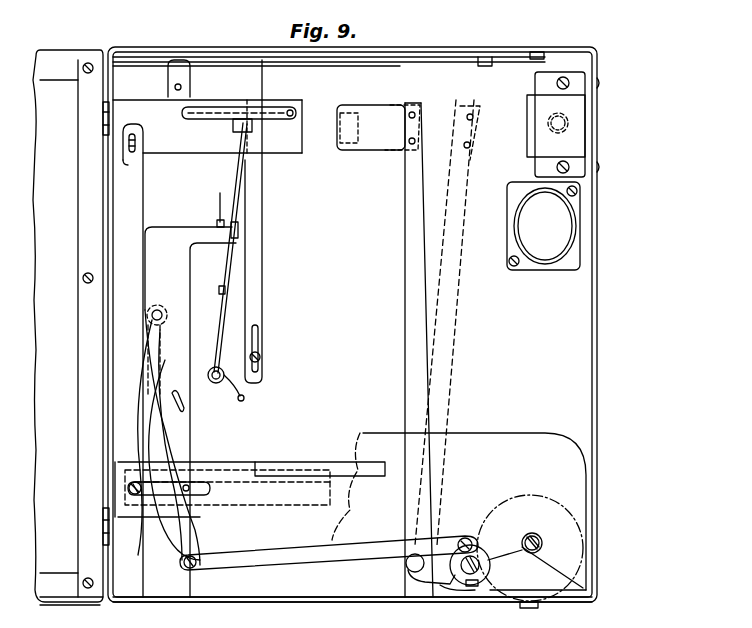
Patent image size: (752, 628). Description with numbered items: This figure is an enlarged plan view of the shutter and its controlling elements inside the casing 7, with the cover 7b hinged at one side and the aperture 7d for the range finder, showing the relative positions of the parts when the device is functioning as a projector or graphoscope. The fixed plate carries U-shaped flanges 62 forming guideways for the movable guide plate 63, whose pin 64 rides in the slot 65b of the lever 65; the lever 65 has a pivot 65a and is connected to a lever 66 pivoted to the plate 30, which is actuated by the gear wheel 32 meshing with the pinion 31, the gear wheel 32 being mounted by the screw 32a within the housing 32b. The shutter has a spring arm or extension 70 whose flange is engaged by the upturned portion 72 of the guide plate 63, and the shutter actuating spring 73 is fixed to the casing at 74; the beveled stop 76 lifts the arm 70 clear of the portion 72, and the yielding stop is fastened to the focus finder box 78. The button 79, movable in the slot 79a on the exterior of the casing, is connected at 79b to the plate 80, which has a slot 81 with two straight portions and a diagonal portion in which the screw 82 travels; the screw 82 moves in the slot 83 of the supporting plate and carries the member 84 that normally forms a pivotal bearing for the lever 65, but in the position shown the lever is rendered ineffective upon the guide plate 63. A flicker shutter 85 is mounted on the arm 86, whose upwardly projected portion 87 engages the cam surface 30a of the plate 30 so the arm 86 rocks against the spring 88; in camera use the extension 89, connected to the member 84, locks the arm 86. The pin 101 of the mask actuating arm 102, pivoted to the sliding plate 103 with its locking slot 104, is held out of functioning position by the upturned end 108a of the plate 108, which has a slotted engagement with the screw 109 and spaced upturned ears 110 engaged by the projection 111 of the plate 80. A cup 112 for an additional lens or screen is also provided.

The casing 7 is at (597, 345).
The closure or cover 7b is at (58, 605).
The aperture for range finder 7d is at (568, 128).
The plate 30 is at (492, 570).
The cam surface 30a is at (478, 586).
The pinion 31 is at (480, 548).
The gear wheel 32 is at (575, 505).
The disc screw 32a is at (545, 545).
The disc housing 32b is at (540, 537).
The U-shaped flanges 62 is at (127, 100).
The movable plate 63 is at (167, 153).
The pin 64 is at (128, 142).
The lever 65 is at (127, 205).
The pivot 65a is at (190, 488).
The slot 65b is at (128, 160).
The lever 66 is at (268, 556).
The spring arm or extension 70 is at (222, 119).
The upturned portion 72 is at (256, 125).
The shutter actuating spring 73 is at (243, 197).
The spring fixing point 74 is at (222, 391).
The stop 76 is at (103, 118).
The focus finder box 78 is at (580, 108).
The button 79 is at (160, 306).
The slot 79a is at (157, 353).
The connection 79b is at (150, 320).
The plate 80 is at (168, 227).
The slot 81 is at (182, 412).
The screw 82 is at (150, 540).
The slot 83 is at (250, 492).
The member 84 is at (165, 513).
The flicker shutter 85 is at (440, 100).
The arm 86 is at (445, 222).
The upwardly projected portion 87 is at (462, 588).
The spring 88 is at (405, 570).
The extension 89 is at (326, 472).
The pin 101 is at (182, 87).
The arm 102 is at (226, 60).
The plate 103 is at (512, 60).
The slot 104 is at (546, 55).
The plate 108 is at (265, 218).
The upturned end 108a is at (295, 62).
The screw 109 is at (262, 352).
The upturned ears 110 is at (222, 290).
The projection 111 is at (240, 238).
The cup 112 is at (568, 263).